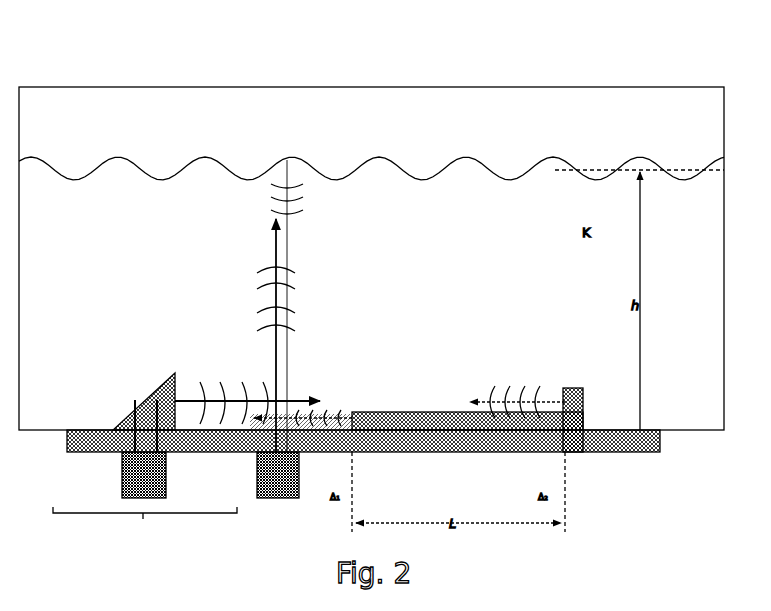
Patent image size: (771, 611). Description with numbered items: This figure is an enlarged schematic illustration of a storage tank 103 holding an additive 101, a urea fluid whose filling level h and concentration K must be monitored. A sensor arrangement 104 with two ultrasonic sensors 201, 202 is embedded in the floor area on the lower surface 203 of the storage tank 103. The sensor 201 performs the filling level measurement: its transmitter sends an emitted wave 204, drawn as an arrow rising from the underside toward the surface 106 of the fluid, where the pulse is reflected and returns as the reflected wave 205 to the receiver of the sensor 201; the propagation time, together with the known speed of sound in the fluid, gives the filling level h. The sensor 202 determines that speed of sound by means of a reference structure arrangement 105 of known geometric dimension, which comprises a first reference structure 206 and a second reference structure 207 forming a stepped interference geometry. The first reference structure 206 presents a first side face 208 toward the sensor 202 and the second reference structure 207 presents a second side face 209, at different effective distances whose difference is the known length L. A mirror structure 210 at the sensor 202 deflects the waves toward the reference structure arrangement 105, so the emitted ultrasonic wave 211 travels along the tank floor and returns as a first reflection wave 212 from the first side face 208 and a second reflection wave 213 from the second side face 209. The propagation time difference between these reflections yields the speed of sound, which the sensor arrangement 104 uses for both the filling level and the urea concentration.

The additive 101 is at (625, 211).
The storage tank 103 is at (196, 86).
The sensor arrangement 104 is at (145, 526).
The reference structure arrangement 105 is at (437, 362).
The surface of the fluid 106 is at (234, 156).
The sensor 201 is at (256, 485).
The sensor 202 is at (120, 485).
The lower surface 203 is at (461, 452).
The emitted wave 204 is at (251, 283).
The reflected wave 205 is at (330, 199).
The first reference structure 206 is at (388, 441).
The second reference structure 207 is at (585, 445).
The first side face 208 is at (352, 412).
The second side face 209 is at (562, 388).
The mirror structure 210 is at (116, 424).
The ultrasonic wave 211 is at (208, 384).
The first reflection wave 212 is at (330, 398).
The second reflection wave 213 is at (503, 376).